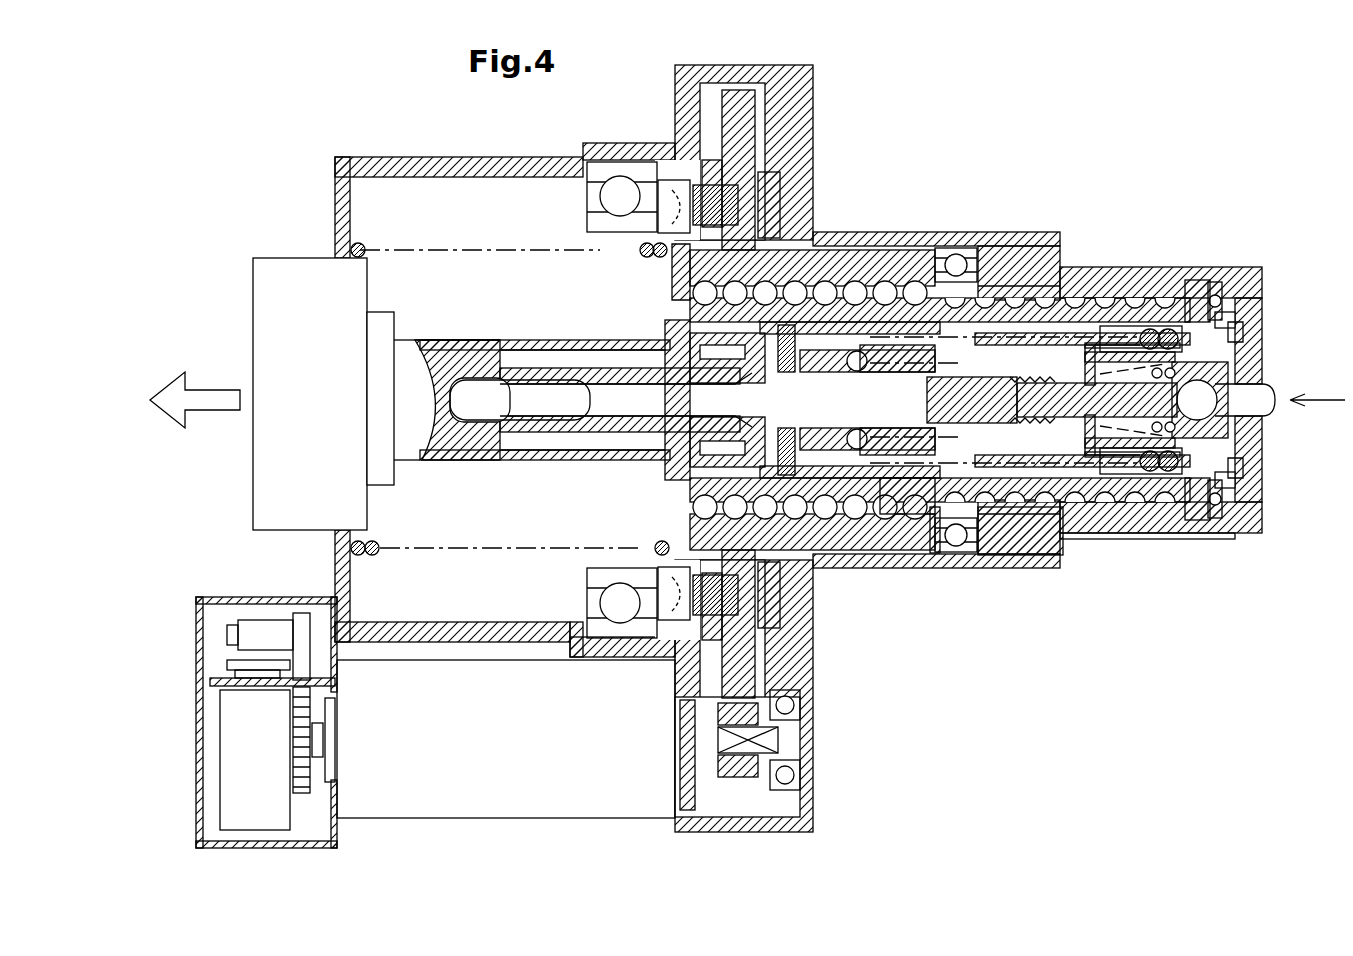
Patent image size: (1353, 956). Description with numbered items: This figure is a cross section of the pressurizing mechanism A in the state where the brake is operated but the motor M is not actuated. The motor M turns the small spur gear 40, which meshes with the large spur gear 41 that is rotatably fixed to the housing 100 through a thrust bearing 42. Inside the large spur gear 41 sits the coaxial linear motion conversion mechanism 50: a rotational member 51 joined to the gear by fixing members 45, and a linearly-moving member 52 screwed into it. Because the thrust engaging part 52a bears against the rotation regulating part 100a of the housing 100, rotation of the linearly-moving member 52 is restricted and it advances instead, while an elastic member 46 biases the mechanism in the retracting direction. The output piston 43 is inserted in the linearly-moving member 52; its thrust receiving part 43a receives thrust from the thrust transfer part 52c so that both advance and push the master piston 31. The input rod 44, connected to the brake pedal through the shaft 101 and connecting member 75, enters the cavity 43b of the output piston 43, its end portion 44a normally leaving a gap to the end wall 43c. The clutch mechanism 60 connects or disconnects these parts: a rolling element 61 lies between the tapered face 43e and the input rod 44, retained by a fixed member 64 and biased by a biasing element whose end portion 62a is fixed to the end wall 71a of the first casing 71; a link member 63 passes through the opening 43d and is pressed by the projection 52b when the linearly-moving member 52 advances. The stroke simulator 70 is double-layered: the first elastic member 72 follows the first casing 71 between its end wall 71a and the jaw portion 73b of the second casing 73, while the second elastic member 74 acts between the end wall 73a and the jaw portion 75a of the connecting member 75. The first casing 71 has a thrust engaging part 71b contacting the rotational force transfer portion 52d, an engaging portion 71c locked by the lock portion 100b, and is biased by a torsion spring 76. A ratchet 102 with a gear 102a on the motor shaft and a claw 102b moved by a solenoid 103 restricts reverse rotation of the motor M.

The master piston 31 is at (328, 276).
The small spur gear 40 is at (752, 770).
The large spur gear 41 is at (755, 115).
The thrust bearing 42 is at (770, 192).
The output piston 43 is at (820, 452).
The thrust receiving part 43a is at (665, 452).
The cavity 43b is at (528, 410).
The end wall 43c is at (527, 366).
The opening 43d is at (770, 348).
The tapered face 43e is at (878, 372).
The input rod 44 is at (997, 383).
The end portion 44a is at (590, 408).
The fixing members 45 is at (668, 200).
The elastic member 46 is at (375, 556).
The linear motion conversion mechanism 50 is at (905, 262).
The rotational member 51 is at (686, 274).
The linearly-moving member 52 is at (975, 300).
The thrust engaging part 52a is at (1190, 345).
The projection 52b is at (832, 278).
The thrust transfer part 52c is at (882, 500).
The rotational force transfer portion 52d is at (935, 540).
The clutch mechanism 60 is at (760, 340).
The rolling element 61 is at (848, 368).
The end portion 62a is at (968, 556).
The link member 63 is at (788, 372).
The fixed member 64 is at (945, 352).
The stroke simulator 70 is at (1240, 424).
The first casing 71 is at (1165, 470).
The end wall 71a is at (1030, 475).
The thrust engaging part 71b is at (1050, 465).
The engaging portion 71c is at (1240, 480).
The first elastic member 72 is at (1155, 328).
The second casing 73 is at (1100, 330).
The end wall 73a is at (1052, 345).
The jaw portion 73b is at (1210, 352).
The second elastic member 74 is at (1130, 480).
The connecting member 75 is at (1095, 450).
The jaw portion 75a is at (1150, 380).
The torsion spring 76 is at (1216, 292).
The housing 100 is at (805, 84).
The rotation regulating part 100a is at (1030, 290).
The lock portion 100b is at (1233, 325).
The shaft 101 is at (1255, 395).
The ratchet 102 is at (300, 815).
The gear 102a is at (312, 724).
The claw 102b is at (300, 615).
The solenoid 103 is at (232, 742).
The motor M is at (540, 822).
The pressurizing mechanism A is at (1203, 152).